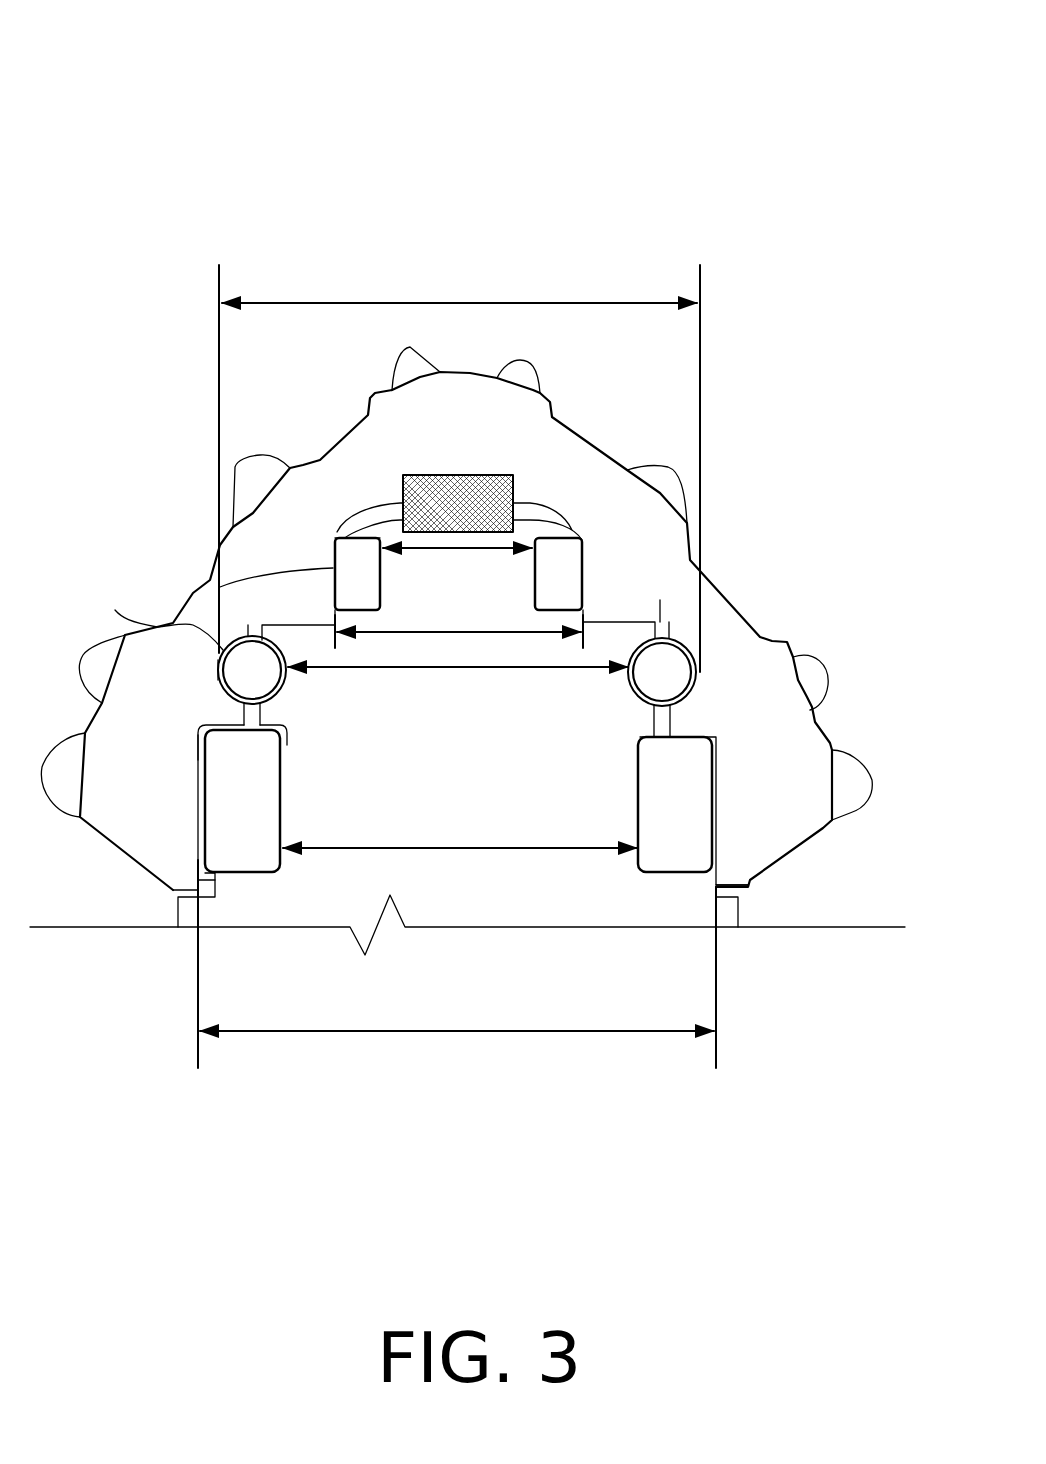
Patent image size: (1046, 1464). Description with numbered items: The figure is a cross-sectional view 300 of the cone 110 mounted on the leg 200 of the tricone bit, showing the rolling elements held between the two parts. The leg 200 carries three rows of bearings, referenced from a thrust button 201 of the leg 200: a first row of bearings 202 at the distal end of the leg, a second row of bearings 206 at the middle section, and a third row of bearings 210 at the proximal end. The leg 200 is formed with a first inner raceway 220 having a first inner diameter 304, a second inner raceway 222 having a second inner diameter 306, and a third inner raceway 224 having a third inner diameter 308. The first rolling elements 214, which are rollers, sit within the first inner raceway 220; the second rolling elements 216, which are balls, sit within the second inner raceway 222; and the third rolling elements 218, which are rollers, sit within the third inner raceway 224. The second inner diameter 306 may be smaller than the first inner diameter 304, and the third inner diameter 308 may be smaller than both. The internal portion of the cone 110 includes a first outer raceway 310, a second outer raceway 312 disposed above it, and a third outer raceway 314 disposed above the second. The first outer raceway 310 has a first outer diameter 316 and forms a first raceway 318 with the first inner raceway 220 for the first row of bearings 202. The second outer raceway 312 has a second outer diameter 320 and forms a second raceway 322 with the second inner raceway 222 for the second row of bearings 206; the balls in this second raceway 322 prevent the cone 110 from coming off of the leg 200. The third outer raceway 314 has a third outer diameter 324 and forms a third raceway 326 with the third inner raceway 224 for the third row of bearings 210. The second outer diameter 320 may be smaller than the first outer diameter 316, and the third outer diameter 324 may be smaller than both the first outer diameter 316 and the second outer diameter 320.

The cross-sectional view 300 is at (132, 46).
The leg 200 is at (565, 887).
The cone 110 is at (576, 478).
The second row of bearings 206 is at (145, 618).
The third row of bearings 210 is at (332, 567).
The third raceway 326 is at (590, 533).
The thrust button 201 is at (479, 457).
The third rolling elements 218 is at (560, 577).
The third outer raceway 314 is at (333, 541).
The third inner raceway 224 is at (386, 574).
The second rolling elements 216 is at (271, 682).
The second raceway 322 is at (633, 612).
The first rolling elements 214 is at (262, 830).
The second inner raceway 222 is at (290, 685).
The first inner raceway 220 is at (286, 776).
The second outer raceway 312 is at (215, 669).
The first outer raceway 310 is at (195, 742).
The first row of bearings 202 is at (210, 777).
The first raceway 318 is at (640, 885).
The second outer diameter 320 is at (459, 468).
The third inner diameter 308 is at (476, 560).
The third outer diameter 324 is at (476, 644).
The second inner diameter 306 is at (476, 679).
The first inner diameter 304 is at (476, 860).
The first outer diameter 316 is at (457, 964).